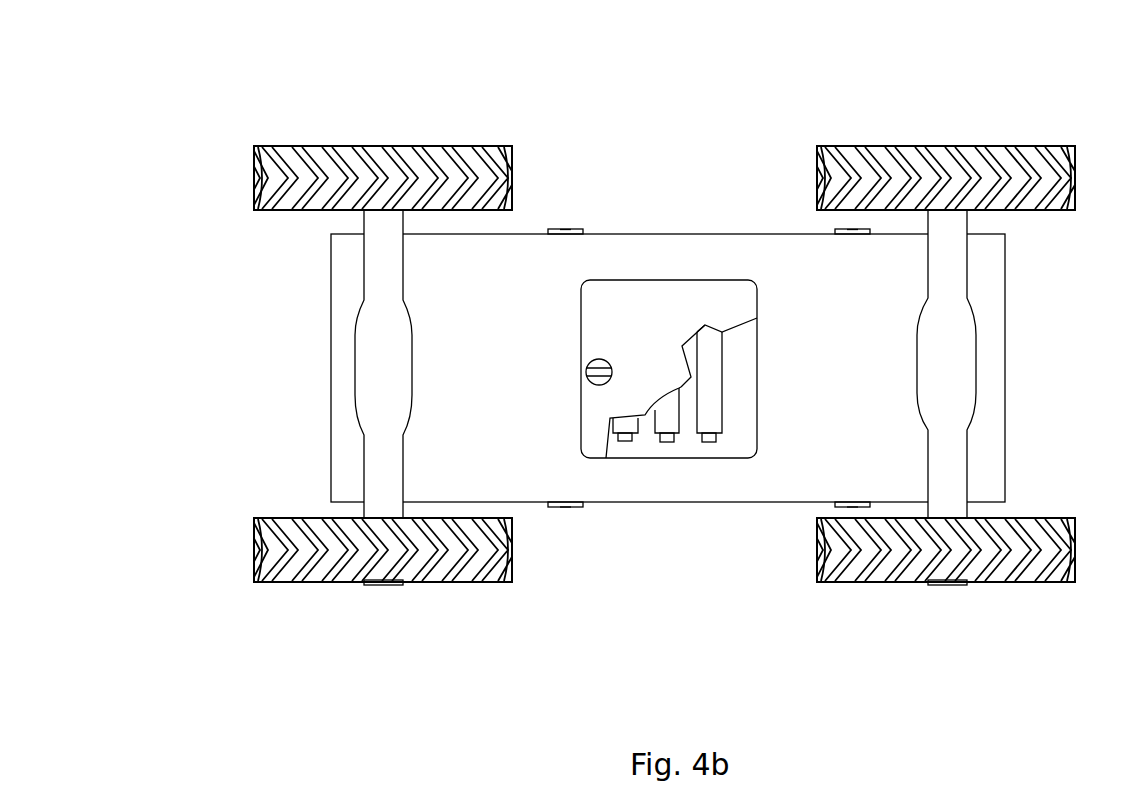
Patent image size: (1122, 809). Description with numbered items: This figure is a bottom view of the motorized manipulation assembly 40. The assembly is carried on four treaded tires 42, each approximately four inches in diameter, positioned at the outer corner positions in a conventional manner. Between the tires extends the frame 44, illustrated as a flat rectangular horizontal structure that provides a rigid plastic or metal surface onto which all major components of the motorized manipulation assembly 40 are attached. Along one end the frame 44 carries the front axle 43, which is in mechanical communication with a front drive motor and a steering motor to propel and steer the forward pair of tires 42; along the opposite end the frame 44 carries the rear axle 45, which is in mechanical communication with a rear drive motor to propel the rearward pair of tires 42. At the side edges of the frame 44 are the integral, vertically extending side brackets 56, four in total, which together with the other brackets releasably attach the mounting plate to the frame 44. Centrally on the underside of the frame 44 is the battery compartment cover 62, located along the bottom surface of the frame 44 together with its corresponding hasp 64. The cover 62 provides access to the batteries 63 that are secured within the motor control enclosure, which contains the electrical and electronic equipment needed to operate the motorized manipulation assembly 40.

The motorized manipulation assembly 40 is at (206, 86).
The treaded tires 42 is at (440, 150).
The front axle 43 is at (962, 380).
The frame 44 is at (332, 264).
The rear axle 45 is at (385, 363).
The side brackets 56 is at (835, 229).
The battery compartment cover 62 is at (750, 300).
The battery 63 is at (628, 425).
The hasp 64 is at (590, 362).